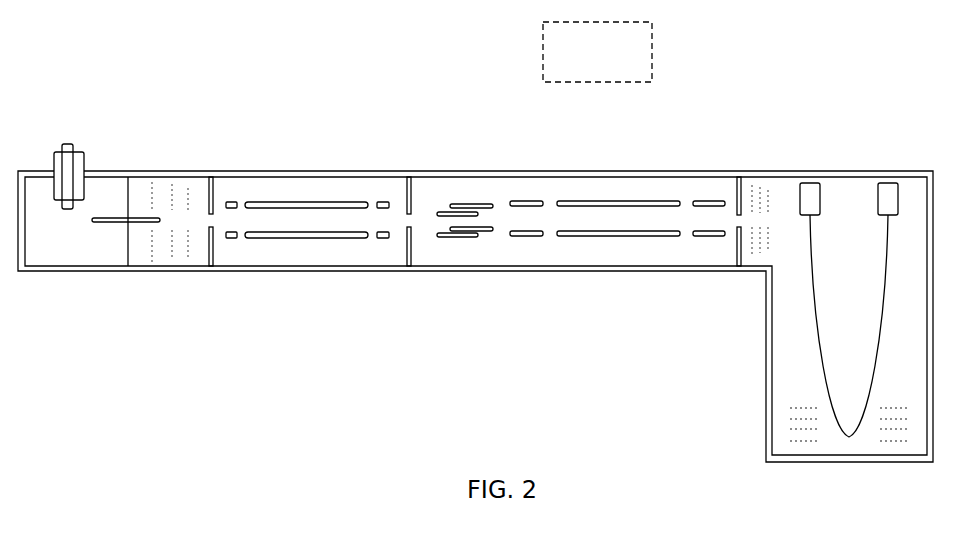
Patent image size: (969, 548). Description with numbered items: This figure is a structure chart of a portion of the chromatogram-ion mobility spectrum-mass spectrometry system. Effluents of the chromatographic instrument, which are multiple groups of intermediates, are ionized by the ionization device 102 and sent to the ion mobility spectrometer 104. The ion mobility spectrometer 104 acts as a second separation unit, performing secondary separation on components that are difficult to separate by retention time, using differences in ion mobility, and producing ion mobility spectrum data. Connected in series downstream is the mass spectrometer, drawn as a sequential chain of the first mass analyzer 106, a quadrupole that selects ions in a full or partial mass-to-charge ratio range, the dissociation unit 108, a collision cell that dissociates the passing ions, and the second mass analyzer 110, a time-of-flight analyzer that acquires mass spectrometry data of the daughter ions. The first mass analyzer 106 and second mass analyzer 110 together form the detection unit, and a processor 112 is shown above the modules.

The ionization device 102 is at (90, 160).
The ion mobility spectrometer 104 is at (313, 192).
The first mass analyzer 106 is at (474, 191).
The dissociation unit 108 is at (623, 190).
The second mass analyzer 110 is at (846, 183).
The processor 112 is at (581, 76).